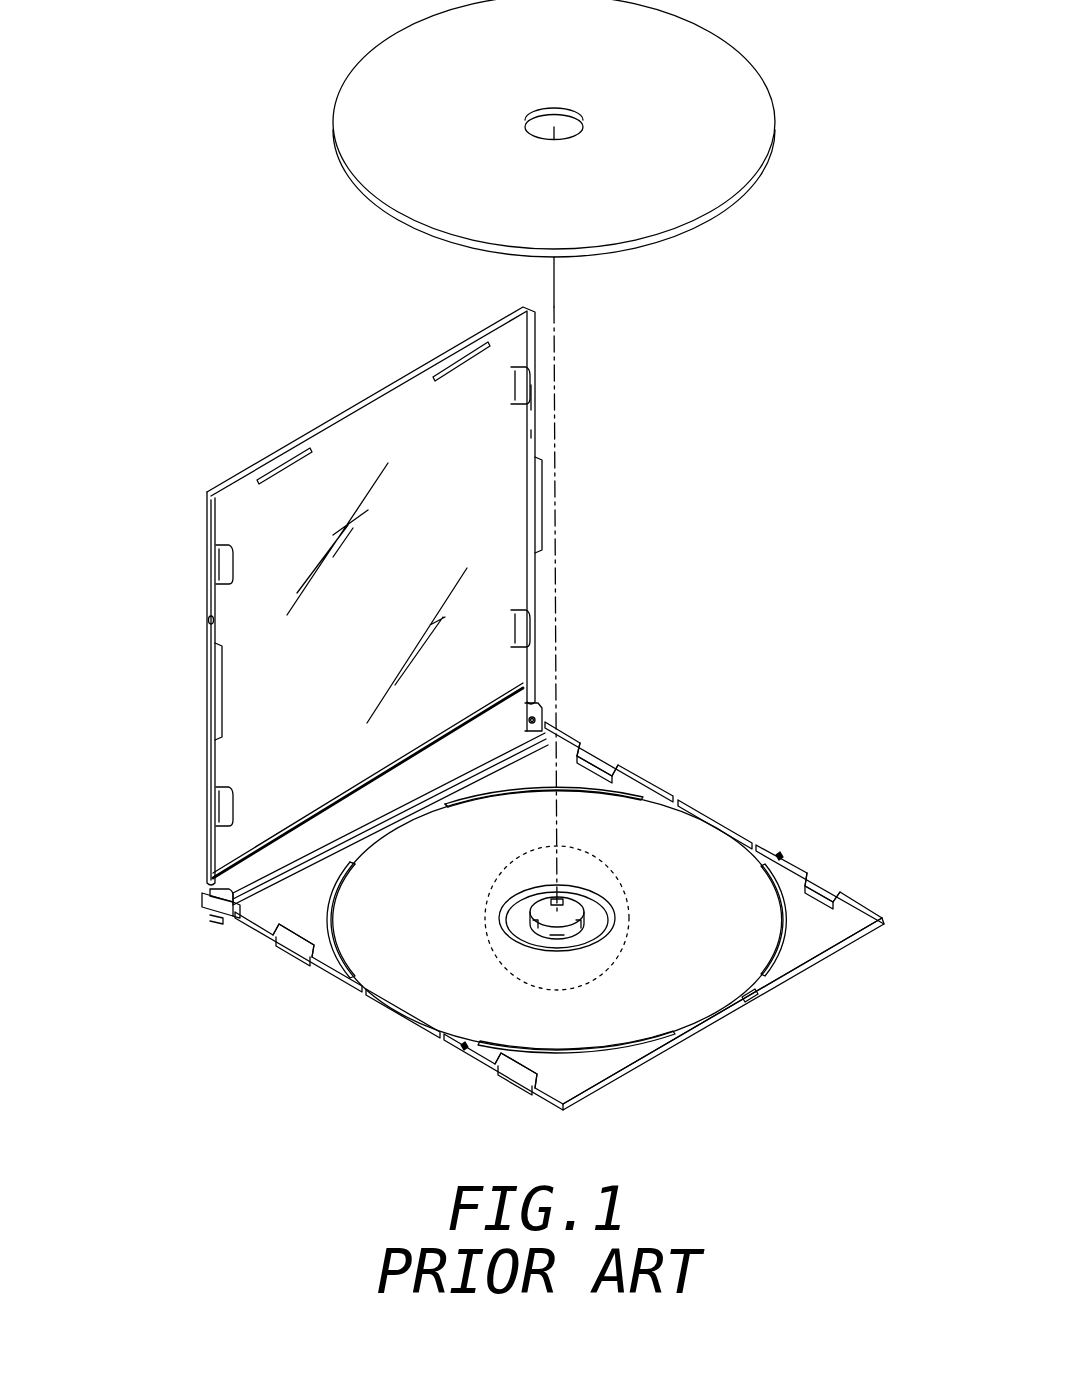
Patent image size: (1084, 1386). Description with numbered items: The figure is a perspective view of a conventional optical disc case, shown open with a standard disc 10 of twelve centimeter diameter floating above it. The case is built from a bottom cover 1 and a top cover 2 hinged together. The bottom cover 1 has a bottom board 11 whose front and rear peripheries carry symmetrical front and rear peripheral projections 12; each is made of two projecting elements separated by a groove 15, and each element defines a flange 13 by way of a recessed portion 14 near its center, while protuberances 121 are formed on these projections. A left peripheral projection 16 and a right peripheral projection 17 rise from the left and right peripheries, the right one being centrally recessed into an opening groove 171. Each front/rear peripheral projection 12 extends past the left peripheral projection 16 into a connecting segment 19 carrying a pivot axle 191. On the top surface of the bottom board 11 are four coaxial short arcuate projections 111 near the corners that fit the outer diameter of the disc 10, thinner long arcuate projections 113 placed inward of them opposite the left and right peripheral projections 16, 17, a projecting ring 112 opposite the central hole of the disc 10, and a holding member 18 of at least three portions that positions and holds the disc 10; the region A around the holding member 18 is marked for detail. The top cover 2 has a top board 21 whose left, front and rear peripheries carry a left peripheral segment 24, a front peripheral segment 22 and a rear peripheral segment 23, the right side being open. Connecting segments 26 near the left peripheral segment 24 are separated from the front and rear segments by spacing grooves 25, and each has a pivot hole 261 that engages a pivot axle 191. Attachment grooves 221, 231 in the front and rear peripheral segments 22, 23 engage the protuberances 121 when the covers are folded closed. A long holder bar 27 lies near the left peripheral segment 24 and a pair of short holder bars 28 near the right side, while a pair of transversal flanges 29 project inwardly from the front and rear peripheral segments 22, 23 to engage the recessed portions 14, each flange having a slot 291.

The bottom cover 1 is at (678, 780).
The top cover 2 is at (558, 465).
The disc 10 is at (675, 218).
The bottom board 11 is at (697, 840).
The short arcuate projections 111 is at (515, 797).
The projecting ring 112 is at (510, 938).
The long arcuate projections 113 is at (430, 818).
The front and rear peripheral projections 12 is at (330, 978).
The protuberances 121 is at (456, 1047).
The flange 13 is at (295, 955).
The recessed portion 14 is at (296, 928).
The groove 15 is at (400, 1005).
The left peripheral projection 16 is at (240, 930).
The right peripheral projection 17 is at (830, 952).
The opening groove 171 is at (733, 1008).
The holding member 18 is at (587, 890).
The connecting segment 19 is at (215, 925).
The pivot axle 191 is at (536, 740).
The top board 21 is at (513, 455).
The front peripheral segment 22 is at (210, 812).
The attachment groove 221 is at (208, 622).
The rear peripheral segment 23 is at (533, 576).
The attachment groove 231 is at (545, 392).
The left peripheral segment 24 is at (393, 807).
The spacing grooves 25 is at (205, 882).
The connecting segments 26 is at (520, 706).
The pivot hole 261 is at (528, 726).
The long holder bar 27 is at (280, 833).
The short holder bars 28 is at (300, 455).
The transversal flanges 29 is at (230, 562).
The slot 291 is at (222, 545).
The region A is at (640, 905).